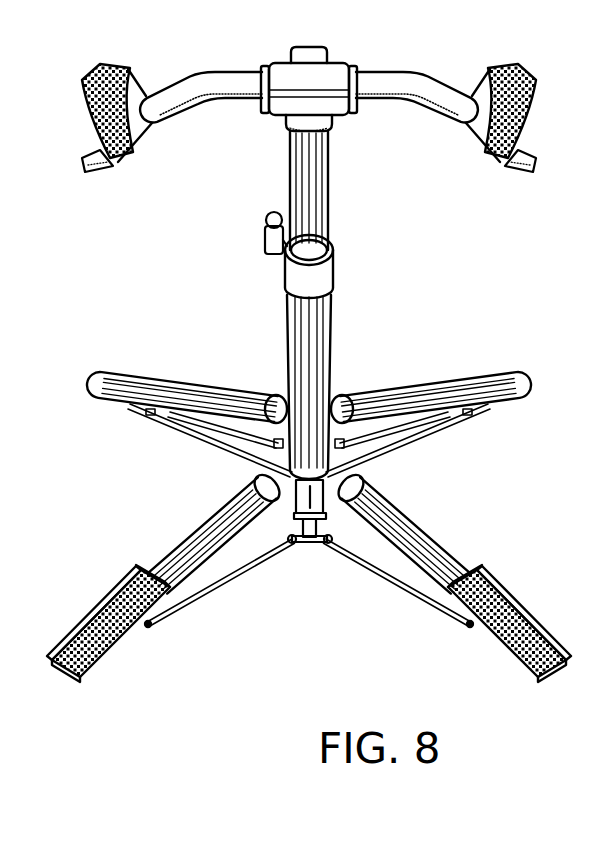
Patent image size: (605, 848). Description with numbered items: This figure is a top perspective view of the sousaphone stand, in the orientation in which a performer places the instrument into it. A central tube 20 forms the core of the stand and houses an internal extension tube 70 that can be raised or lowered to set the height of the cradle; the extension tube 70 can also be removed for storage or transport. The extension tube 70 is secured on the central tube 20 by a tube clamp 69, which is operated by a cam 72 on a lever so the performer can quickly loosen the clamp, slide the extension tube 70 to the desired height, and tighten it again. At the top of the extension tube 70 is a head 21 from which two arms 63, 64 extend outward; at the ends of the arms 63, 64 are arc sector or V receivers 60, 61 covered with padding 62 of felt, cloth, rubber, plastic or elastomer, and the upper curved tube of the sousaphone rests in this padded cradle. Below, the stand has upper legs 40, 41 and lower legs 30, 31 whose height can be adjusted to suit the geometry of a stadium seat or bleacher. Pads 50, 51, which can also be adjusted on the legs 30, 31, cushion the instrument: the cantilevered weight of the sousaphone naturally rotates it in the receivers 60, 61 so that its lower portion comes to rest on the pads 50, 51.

The central tube 20 is at (285, 347).
The head 21 is at (288, 58).
The leg 30 is at (170, 553).
The leg 31 is at (405, 515).
The leg 40 is at (228, 387).
The leg 41 is at (432, 382).
The pad 50 is at (117, 592).
The pad 51 is at (487, 575).
The arc sector receiver 60 is at (481, 153).
The arc sector receiver 61 is at (110, 166).
The padding 62 is at (523, 107).
The arm 63 is at (387, 101).
The arm 64 is at (228, 102).
The tube clamp 69 is at (335, 268).
The extension tube 70 is at (326, 194).
The cam 72 is at (265, 213).